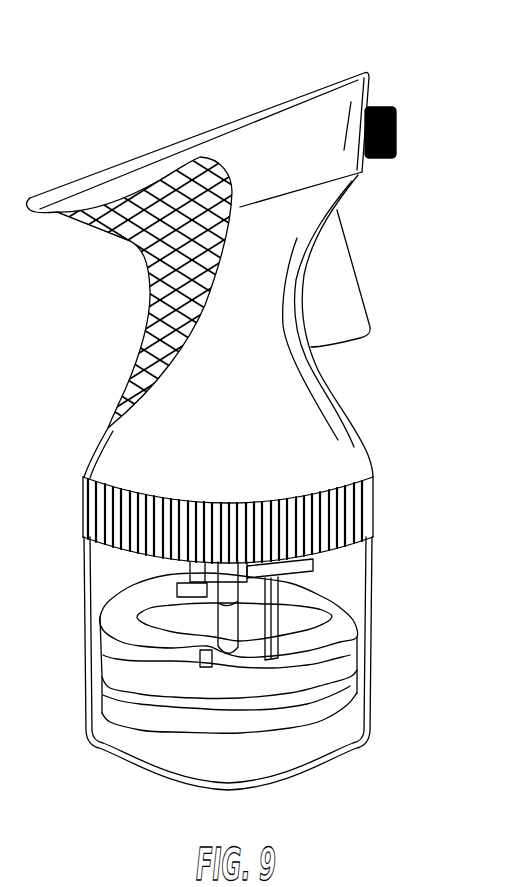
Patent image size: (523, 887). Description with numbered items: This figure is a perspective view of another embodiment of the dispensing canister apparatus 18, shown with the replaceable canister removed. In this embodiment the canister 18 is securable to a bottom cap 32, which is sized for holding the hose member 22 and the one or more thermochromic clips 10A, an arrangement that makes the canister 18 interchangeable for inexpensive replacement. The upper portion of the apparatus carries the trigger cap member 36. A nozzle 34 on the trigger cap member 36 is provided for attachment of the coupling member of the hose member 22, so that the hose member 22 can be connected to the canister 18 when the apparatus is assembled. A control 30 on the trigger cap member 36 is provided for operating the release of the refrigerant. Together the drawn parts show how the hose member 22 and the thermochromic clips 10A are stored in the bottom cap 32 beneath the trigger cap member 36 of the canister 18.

The dispensing canister apparatus 18 is at (70, 103).
The trigger cap member 36 is at (372, 82).
The nozzle 34 is at (398, 134).
The control 30 is at (354, 268).
The bottom cap 32 is at (371, 611).
The hose member 22 is at (103, 657).
The thermochromic clip 10A is at (280, 621).